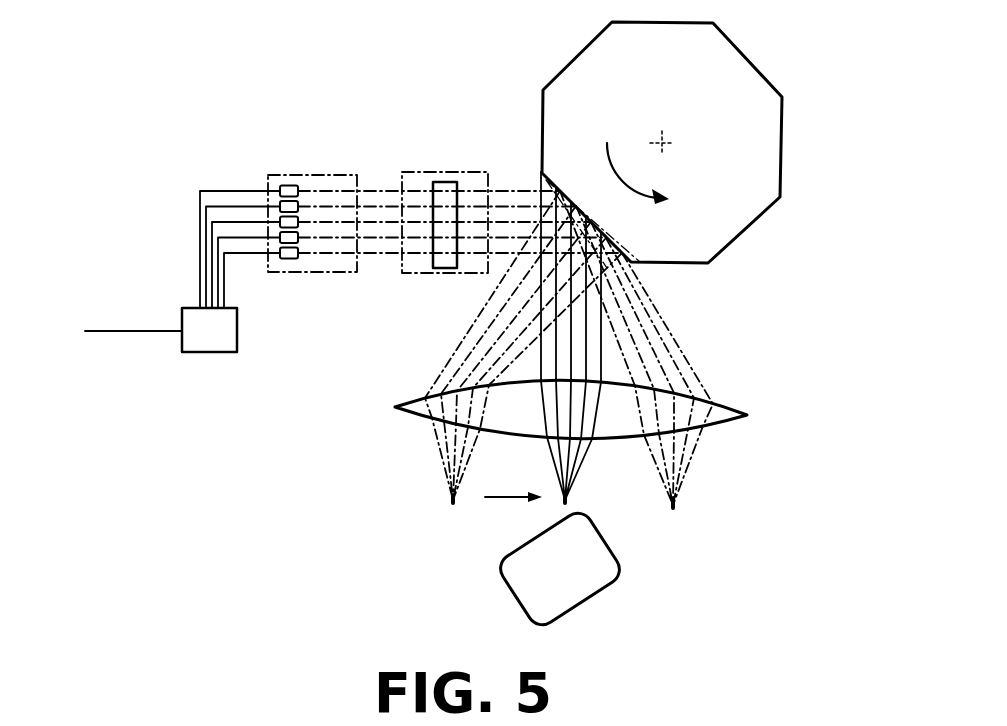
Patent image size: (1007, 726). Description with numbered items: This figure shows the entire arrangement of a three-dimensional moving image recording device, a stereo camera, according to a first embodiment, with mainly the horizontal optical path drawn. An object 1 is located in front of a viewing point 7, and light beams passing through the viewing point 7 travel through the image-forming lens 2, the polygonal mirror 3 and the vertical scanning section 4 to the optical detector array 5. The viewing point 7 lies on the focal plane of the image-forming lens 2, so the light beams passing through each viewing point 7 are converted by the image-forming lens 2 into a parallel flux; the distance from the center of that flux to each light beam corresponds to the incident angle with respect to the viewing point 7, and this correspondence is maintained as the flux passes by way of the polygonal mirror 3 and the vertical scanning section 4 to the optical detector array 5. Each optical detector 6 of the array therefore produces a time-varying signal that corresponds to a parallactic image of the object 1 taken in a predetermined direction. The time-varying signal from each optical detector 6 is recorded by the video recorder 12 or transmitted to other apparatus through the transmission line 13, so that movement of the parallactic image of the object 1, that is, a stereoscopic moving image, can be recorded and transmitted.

The object 1 is at (627, 549).
The image-forming lens 2 is at (717, 400).
The polygonal mirror 3 is at (740, 50).
The vertical scanning section 4 is at (425, 172).
The optical detector array 5 is at (310, 174).
The optical detector 6 is at (292, 185).
The viewing point 7 is at (448, 496).
The video recorder 12 is at (237, 330).
The transmission line 13 is at (120, 331).